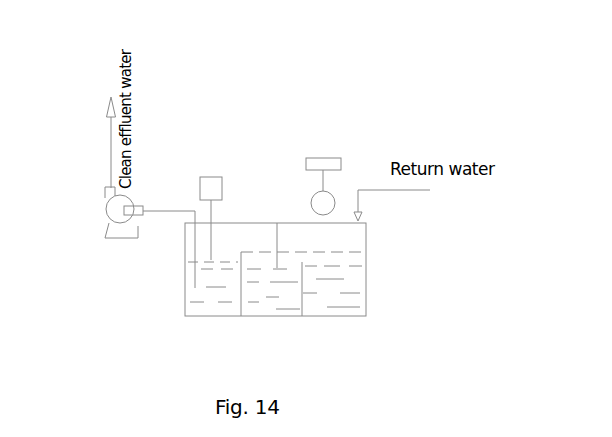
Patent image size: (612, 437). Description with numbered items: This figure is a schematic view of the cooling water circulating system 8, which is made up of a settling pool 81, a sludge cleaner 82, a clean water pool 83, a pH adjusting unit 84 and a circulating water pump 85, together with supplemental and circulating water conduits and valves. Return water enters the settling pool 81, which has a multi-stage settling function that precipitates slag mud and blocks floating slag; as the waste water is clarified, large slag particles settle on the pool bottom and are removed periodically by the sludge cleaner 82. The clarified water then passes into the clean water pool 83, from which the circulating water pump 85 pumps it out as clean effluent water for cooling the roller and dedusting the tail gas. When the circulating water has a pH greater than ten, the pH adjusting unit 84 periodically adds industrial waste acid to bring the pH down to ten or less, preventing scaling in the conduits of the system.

The cooling water circulating system 8 is at (275, 214).
The settling pool 81 is at (375, 267).
The sludge cleaner 82 is at (336, 163).
The clean water pool 83 is at (149, 270).
The pH adjusting unit 84 is at (211, 186).
The circulating water pump 85 is at (127, 200).